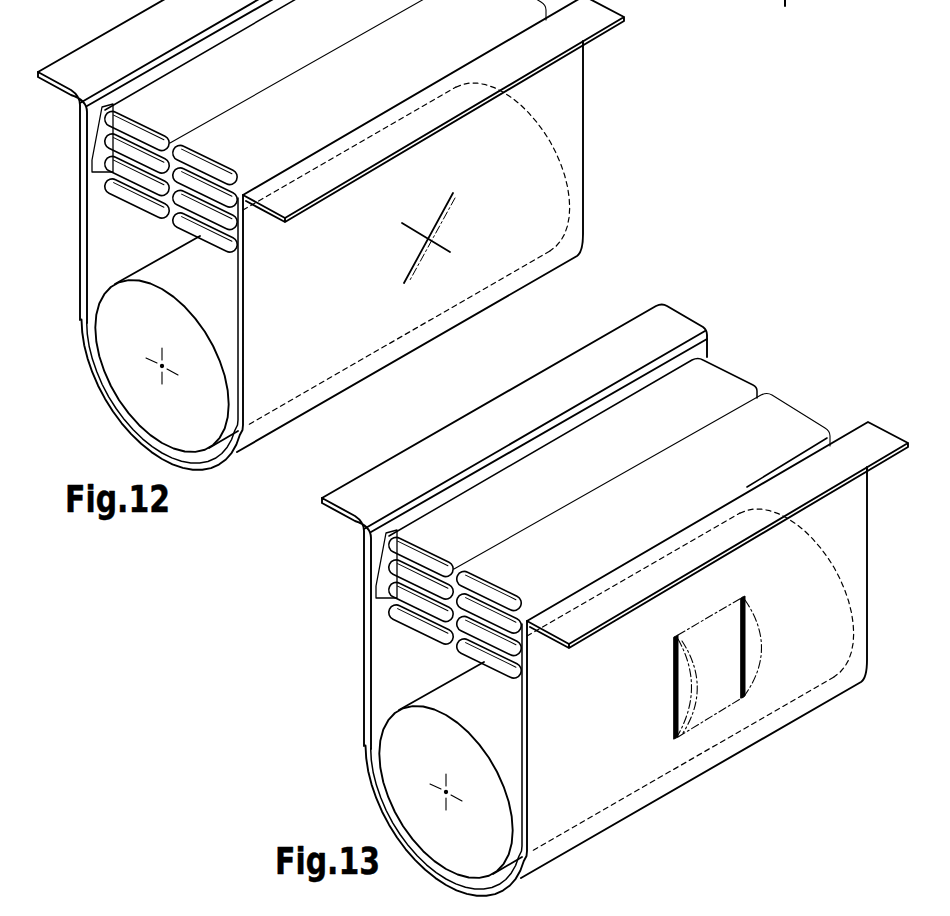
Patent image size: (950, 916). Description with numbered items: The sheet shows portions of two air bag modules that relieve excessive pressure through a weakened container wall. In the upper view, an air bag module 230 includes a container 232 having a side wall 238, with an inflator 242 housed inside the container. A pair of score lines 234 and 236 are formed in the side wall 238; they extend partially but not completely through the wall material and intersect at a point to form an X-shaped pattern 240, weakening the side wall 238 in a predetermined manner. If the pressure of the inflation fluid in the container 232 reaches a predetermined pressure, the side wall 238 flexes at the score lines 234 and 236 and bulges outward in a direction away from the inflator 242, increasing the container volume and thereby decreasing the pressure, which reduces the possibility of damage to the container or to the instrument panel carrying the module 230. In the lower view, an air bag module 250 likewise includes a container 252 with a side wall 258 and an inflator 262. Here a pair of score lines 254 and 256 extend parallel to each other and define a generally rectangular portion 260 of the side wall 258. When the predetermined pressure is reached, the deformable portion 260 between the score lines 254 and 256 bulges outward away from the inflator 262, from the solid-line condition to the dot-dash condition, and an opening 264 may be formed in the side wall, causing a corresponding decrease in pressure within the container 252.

In FIG. 12, the air bag module 230 is at (391, 235).
In FIG. 12, the container 232 is at (600, 79).
In FIG. 12, the score line 234 is at (442, 216).
In FIG. 12, the score line 236 is at (420, 237).
In FIG. 12, the side wall 238 is at (550, 205).
In FIG. 12, the X-shaped pattern 240 is at (432, 238).
In FIG. 12, the inflator 242 is at (173, 255).
In FIG. 13, the air bag module 250 is at (542, 600).
In FIG. 13, the container 252 is at (571, 600).
In FIG. 13, the score line 254 is at (778, 636).
In FIG. 13, the score line 256 is at (631, 687).
In FIG. 13, the side wall 258 is at (694, 672).
In FIG. 13, the rectangular portion 260 is at (785, 679).
In FIG. 13, the inflator 262 is at (407, 768).
In FIG. 13, the opening 264 is at (671, 667).